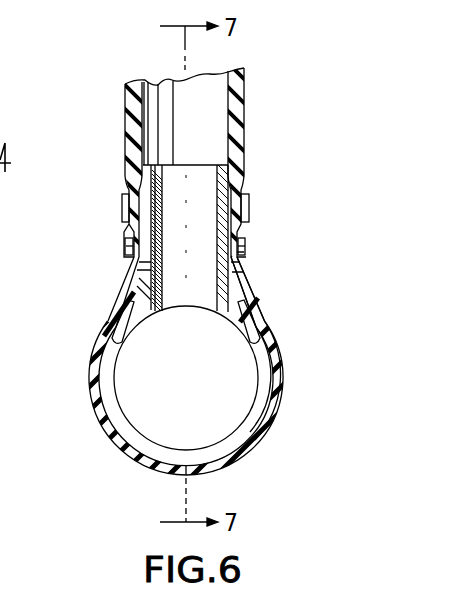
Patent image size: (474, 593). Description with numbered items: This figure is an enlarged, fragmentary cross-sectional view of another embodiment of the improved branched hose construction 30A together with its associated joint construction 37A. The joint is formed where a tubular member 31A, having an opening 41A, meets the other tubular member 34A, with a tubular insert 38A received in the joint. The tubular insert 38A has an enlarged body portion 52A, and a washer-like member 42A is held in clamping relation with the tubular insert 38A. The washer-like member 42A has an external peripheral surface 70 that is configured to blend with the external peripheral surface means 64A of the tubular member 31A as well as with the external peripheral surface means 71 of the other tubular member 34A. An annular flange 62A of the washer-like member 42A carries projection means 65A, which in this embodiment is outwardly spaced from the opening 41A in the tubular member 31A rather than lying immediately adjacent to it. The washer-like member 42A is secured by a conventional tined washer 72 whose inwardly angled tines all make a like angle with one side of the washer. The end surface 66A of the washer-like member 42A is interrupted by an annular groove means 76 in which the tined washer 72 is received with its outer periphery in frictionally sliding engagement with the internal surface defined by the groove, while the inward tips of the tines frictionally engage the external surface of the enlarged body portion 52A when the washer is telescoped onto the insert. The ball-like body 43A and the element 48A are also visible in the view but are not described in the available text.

The branched hose construction 30A is at (298, 183).
The tubular member 31A is at (92, 413).
The other tubular member 34A is at (124, 106).
The joint construction 37A is at (106, 246).
The tubular insert 38A is at (128, 272).
The opening 41A is at (262, 318).
The washer-like member 42A is at (250, 270).
The ball 43A is at (236, 340).
The socket lip 48A is at (113, 330).
The enlarged body portion 52A is at (136, 262).
The annular flange 62A is at (254, 290).
The external peripheral surface means 64A is at (287, 357).
The projection means 65A is at (113, 308).
The end surface 66A is at (127, 232).
The external peripheral surface 70 is at (120, 296).
The external peripheral surface means 71 is at (245, 106).
The tined washer 72 is at (246, 252).
The annular groove means 76 is at (250, 235).